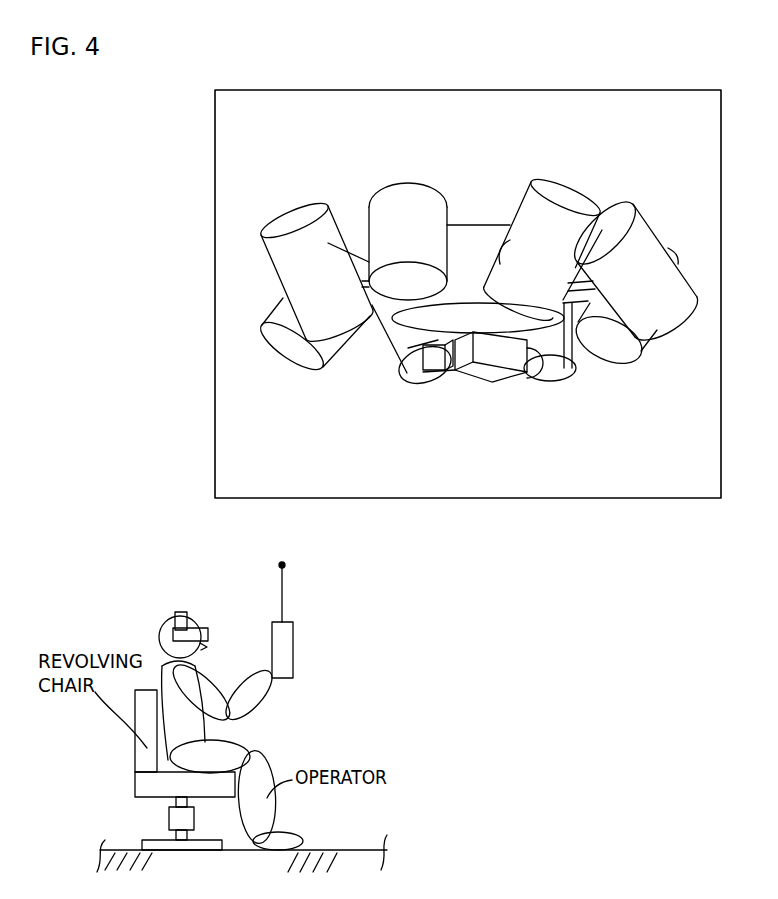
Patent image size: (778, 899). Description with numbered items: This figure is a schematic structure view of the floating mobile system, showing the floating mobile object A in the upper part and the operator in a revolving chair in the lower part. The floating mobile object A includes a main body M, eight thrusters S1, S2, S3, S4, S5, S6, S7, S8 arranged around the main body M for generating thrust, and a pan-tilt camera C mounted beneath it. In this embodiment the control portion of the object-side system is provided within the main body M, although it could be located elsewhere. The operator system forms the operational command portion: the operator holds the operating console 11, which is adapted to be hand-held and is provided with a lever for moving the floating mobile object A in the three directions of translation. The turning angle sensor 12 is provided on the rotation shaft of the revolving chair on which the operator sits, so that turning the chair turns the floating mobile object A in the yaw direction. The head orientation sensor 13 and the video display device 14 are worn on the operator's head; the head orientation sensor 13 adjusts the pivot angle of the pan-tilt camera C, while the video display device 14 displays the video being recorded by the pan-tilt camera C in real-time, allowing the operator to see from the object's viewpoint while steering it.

The floating mobile object A is at (290, 161).
The main body M is at (478, 271).
The thruster S1 is at (557, 372).
The thruster S2 is at (413, 373).
The thruster S3 is at (292, 347).
The thruster S4 is at (295, 273).
The thruster S5 is at (420, 198).
The thruster S6 is at (567, 198).
The thruster S7 is at (640, 233).
The thruster S8 is at (620, 353).
The pan-tilt camera C is at (495, 352).
The operating console 11 is at (283, 649).
The turning angle sensor 12 is at (178, 817).
The head orientation sensor 13 is at (178, 615).
The video display device 14 is at (208, 630).